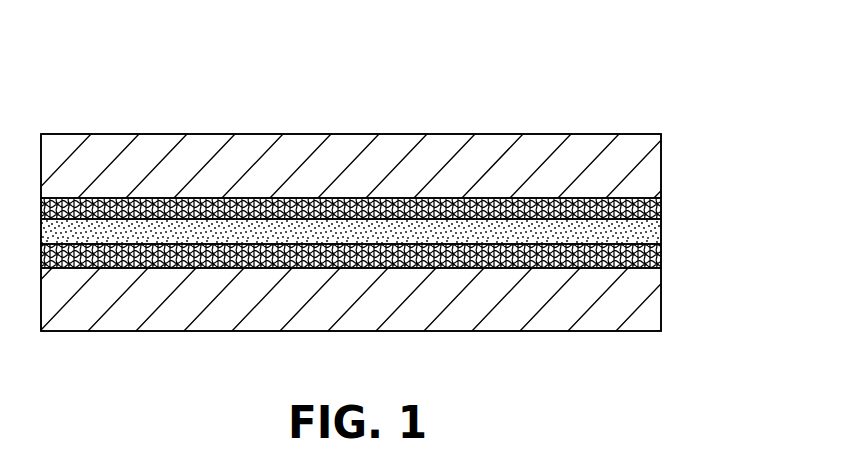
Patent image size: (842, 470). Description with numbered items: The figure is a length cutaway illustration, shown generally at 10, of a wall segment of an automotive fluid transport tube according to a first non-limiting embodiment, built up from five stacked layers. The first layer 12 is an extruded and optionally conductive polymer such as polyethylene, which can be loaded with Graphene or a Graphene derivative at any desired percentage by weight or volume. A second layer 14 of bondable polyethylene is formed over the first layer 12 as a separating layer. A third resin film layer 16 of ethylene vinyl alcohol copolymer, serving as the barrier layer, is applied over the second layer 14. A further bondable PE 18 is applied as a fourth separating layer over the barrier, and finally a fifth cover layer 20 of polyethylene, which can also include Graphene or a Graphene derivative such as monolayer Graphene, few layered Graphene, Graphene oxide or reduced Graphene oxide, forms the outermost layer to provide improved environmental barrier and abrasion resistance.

The wall segment of an automotive fluid transport tube 10 is at (558, 67).
The first layer 12 is at (672, 302).
The second layer 14 is at (672, 257).
The third resin film layer 16 is at (672, 233).
The bondable PE 18 is at (672, 212).
The fifth cover layer 20 is at (672, 164).